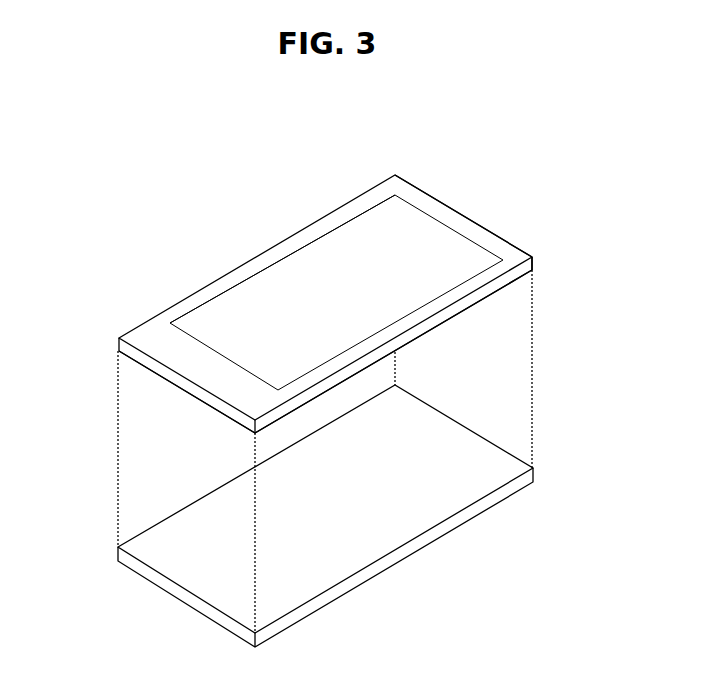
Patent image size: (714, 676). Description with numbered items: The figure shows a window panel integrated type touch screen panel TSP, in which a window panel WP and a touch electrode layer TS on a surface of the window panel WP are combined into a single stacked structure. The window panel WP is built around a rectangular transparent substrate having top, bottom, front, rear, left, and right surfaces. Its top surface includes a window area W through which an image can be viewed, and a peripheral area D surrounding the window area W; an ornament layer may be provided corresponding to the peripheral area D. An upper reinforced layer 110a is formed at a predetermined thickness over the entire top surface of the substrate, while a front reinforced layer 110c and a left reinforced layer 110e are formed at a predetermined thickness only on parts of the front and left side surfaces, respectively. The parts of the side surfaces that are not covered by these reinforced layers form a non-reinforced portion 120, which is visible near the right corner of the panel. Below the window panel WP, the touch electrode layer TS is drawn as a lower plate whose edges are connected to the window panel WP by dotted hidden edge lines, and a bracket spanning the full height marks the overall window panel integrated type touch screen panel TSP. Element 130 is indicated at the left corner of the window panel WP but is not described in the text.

The upper reinforced layer 110a is at (450, 300).
The front reinforced layer 110c is at (417, 340).
The left reinforced layer 110e is at (200, 397).
The non-reinforced portion 120 is at (534, 268).
The display panel 130 is at (118, 340).
The peripheral area D is at (420, 200).
The window area W is at (240, 298).
The window panel WP is at (524, 222).
The touch electrode layer TS is at (513, 431).
The window panel integrated type touch screen panel TSP is at (583, 171).